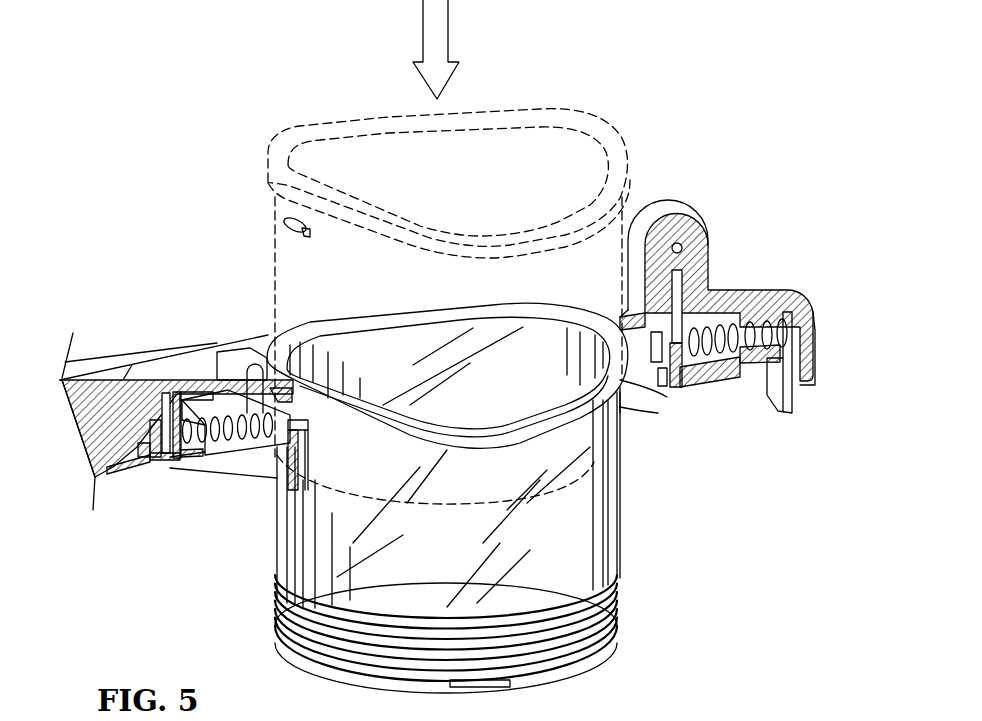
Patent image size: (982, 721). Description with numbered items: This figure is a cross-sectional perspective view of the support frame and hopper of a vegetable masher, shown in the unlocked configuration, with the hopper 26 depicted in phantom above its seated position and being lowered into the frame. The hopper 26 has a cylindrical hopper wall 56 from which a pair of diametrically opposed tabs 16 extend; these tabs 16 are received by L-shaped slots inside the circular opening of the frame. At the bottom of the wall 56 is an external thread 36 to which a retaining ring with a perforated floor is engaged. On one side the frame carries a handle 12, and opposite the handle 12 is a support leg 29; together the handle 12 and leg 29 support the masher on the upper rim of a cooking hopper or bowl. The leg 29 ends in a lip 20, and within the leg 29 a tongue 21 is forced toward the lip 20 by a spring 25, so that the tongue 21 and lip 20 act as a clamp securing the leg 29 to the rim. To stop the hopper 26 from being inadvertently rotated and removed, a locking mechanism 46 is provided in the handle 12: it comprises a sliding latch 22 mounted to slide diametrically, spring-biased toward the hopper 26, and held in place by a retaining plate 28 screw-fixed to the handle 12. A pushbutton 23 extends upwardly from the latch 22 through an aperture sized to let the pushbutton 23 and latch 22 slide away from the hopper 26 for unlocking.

The handle 12 is at (160, 363).
The tabs 16 is at (306, 236).
The lip 20 is at (808, 387).
The tongue 21 is at (777, 400).
The sliding latch 22 is at (245, 445).
The pushbutton 23 is at (235, 358).
The spring 25 is at (712, 357).
The hopper 26 is at (622, 464).
The retaining plate 28 is at (175, 465).
The support leg 29 is at (733, 282).
The external thread 36 is at (597, 653).
The locking mechanism 46 is at (165, 485).
The hopper wall 56 is at (603, 553).